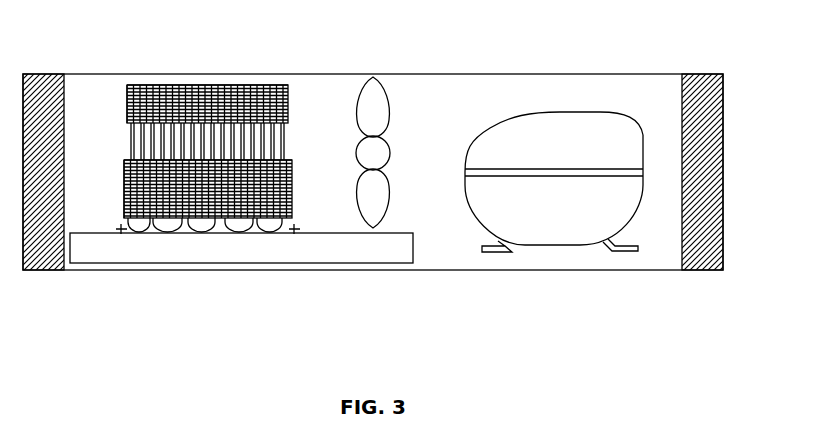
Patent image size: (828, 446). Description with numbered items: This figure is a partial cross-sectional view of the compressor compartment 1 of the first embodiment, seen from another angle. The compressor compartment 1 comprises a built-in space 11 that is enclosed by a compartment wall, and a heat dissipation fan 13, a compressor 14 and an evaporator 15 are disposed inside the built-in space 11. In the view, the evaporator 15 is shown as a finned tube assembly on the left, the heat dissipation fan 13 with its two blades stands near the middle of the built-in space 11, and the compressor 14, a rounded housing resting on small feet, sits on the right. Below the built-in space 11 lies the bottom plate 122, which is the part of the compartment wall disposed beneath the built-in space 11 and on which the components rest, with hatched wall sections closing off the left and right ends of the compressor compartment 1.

The compressor compartment 1 is at (634, 66).
The built-in space 11 is at (457, 95).
The bottom plate 122 is at (440, 270).
The heat dissipation fan 13 is at (373, 92).
The compressor 14 is at (575, 122).
The evaporator 15 is at (188, 95).